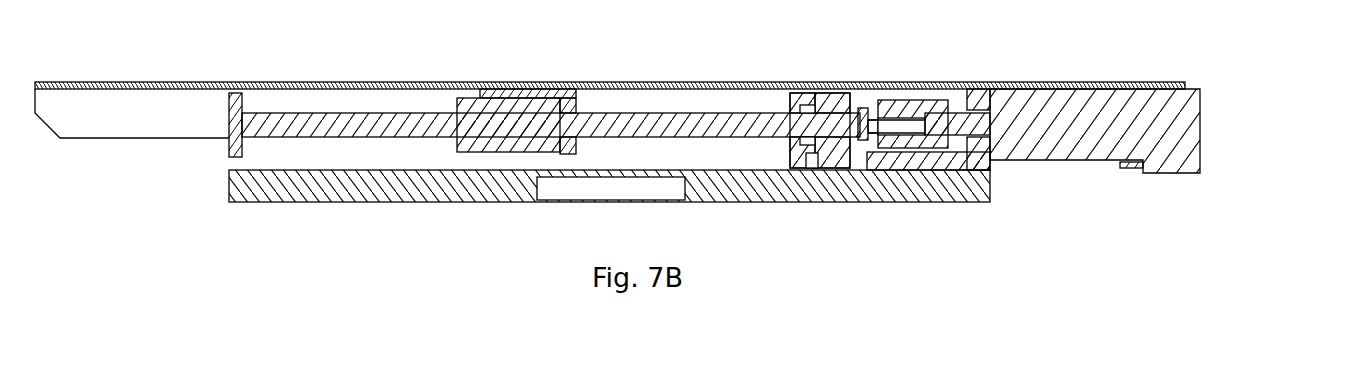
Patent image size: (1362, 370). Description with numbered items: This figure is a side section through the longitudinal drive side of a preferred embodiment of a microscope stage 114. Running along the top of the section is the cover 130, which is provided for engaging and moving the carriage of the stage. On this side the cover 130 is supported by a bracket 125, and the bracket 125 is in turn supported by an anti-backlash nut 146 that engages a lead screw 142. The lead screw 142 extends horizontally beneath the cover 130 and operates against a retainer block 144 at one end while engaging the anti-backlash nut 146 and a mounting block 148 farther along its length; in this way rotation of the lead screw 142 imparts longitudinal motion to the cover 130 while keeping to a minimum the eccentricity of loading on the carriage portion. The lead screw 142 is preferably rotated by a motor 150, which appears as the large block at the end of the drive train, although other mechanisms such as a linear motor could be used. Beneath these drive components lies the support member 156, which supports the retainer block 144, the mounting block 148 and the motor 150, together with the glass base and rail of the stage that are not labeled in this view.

The microscope stage 114 is at (1238, 140).
The bracket 125 is at (564, 95).
The cover 130 is at (132, 82).
The lead screw 142 is at (700, 120).
The retainer block 144 is at (229, 153).
The anti-backlash nut 146 is at (544, 98).
The mounting block 148 is at (837, 95).
The motor 150 is at (1044, 145).
The support member 156 is at (983, 202).